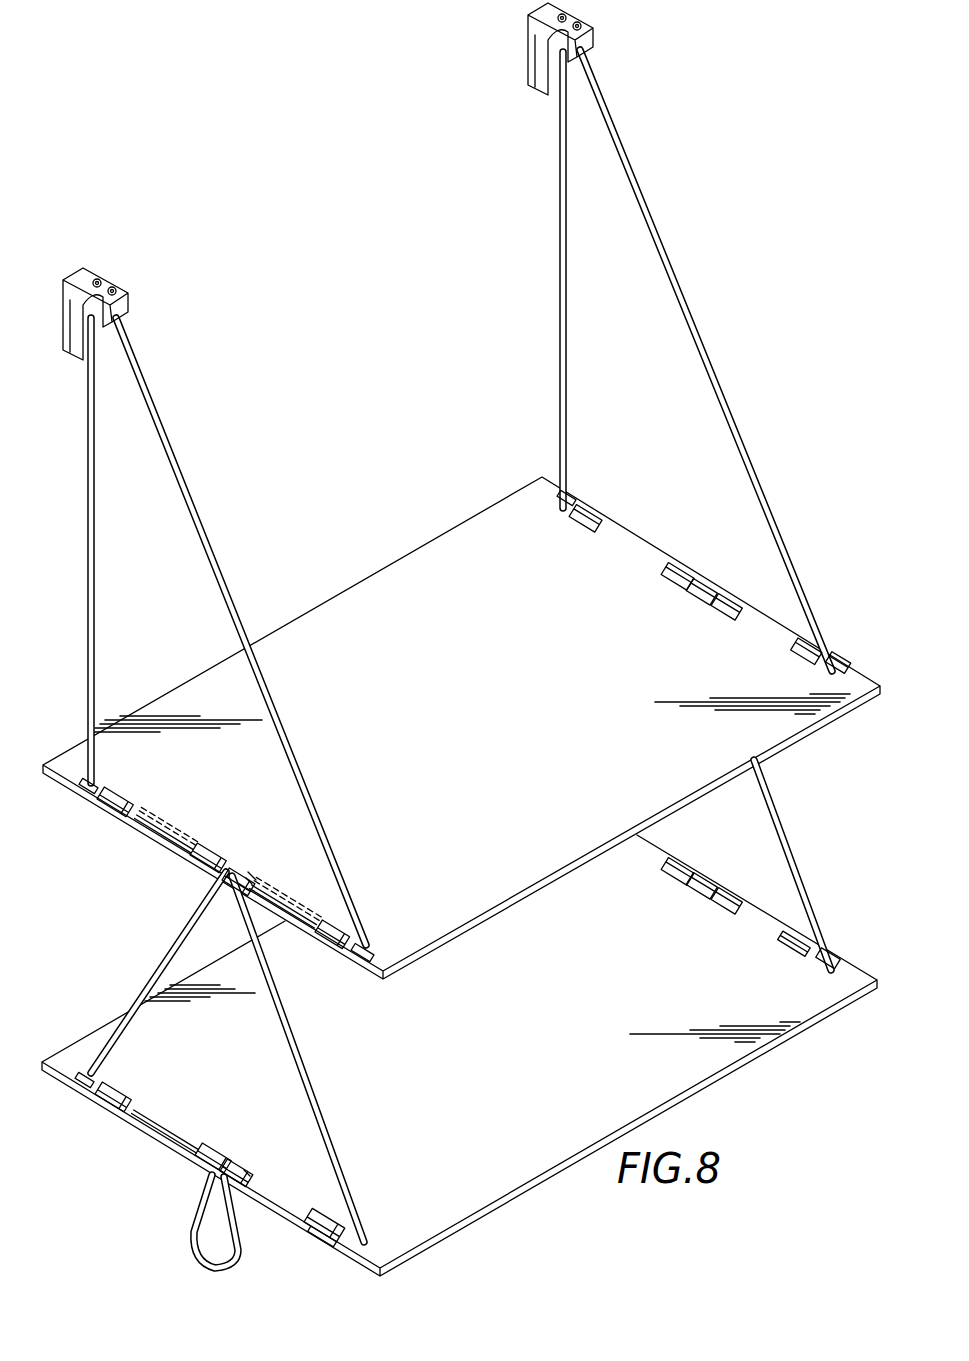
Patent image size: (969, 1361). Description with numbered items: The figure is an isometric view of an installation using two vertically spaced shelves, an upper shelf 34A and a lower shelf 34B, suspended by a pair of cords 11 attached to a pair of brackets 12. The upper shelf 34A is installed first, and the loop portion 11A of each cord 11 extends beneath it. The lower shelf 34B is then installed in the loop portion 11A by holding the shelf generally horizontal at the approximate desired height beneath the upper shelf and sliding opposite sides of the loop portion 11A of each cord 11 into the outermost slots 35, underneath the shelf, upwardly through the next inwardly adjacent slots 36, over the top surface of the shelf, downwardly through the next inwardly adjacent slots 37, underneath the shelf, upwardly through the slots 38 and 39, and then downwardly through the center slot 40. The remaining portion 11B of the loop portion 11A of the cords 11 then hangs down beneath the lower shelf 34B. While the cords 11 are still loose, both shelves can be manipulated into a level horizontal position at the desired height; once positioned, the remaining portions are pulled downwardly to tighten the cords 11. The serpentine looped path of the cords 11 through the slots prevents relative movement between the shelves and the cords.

The cord 11 is at (97, 535).
The loop portion 11A is at (176, 948).
The remaining portion 11B is at (242, 1250).
The bracket member 12 is at (112, 284).
The upper shelf 34A is at (479, 709).
The lower shelf 34B is at (537, 1008).
The outermost slot 35 is at (92, 780).
The next inwardly adjacent slot 36 is at (106, 810).
The next inwardly adjacent slot 37 is at (142, 815).
The slot 38 is at (196, 858).
The slot 39 is at (250, 878).
The center slot 40 is at (222, 878).